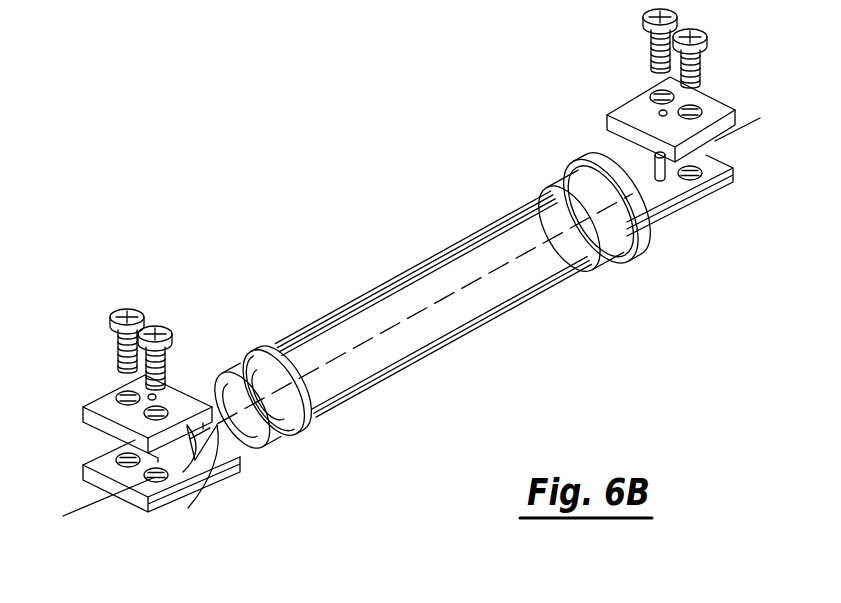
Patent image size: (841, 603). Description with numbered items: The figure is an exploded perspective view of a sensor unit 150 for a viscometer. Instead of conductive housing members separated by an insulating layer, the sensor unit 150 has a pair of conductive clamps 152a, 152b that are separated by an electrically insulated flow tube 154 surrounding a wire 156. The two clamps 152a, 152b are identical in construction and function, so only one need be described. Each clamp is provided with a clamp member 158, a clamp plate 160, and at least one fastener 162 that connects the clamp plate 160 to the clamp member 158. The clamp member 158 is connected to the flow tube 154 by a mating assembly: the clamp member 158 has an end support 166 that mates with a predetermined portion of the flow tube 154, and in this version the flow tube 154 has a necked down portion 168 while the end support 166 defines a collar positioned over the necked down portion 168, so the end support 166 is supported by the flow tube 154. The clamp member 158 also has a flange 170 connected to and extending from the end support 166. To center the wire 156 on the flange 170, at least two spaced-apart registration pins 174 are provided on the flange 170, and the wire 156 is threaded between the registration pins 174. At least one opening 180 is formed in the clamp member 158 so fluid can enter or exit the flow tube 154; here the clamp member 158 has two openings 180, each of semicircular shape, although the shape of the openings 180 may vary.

The sensor unit 150 is at (353, 287).
The clamp 152a is at (142, 440).
The clamp 152b is at (628, 93).
The flow tube 154 is at (455, 358).
The wire 156 is at (88, 512).
The clamp member 158 is at (160, 503).
The clamp plate 160 is at (112, 367).
The fastener 162 is at (128, 311).
The end support 166 is at (238, 470).
The necked down portion 168 is at (277, 443).
The flange 170 is at (185, 500).
The registration pin 174 is at (148, 478).
The opening 180 is at (188, 450).